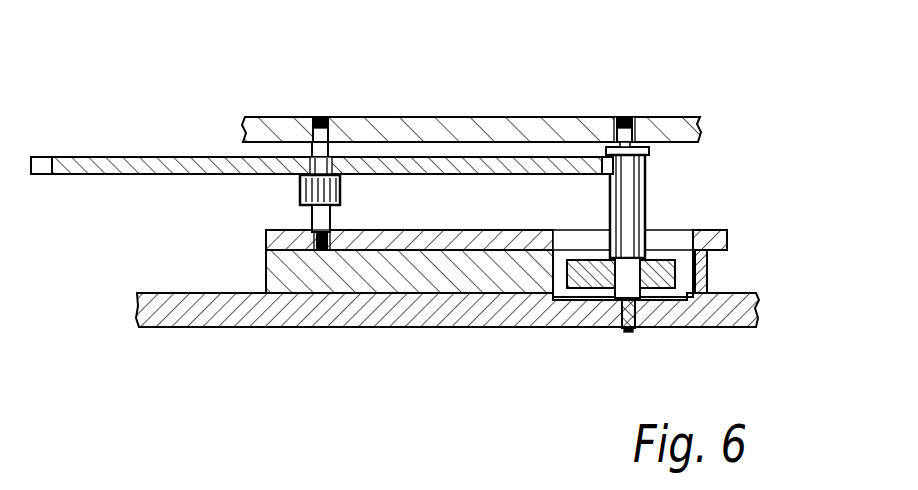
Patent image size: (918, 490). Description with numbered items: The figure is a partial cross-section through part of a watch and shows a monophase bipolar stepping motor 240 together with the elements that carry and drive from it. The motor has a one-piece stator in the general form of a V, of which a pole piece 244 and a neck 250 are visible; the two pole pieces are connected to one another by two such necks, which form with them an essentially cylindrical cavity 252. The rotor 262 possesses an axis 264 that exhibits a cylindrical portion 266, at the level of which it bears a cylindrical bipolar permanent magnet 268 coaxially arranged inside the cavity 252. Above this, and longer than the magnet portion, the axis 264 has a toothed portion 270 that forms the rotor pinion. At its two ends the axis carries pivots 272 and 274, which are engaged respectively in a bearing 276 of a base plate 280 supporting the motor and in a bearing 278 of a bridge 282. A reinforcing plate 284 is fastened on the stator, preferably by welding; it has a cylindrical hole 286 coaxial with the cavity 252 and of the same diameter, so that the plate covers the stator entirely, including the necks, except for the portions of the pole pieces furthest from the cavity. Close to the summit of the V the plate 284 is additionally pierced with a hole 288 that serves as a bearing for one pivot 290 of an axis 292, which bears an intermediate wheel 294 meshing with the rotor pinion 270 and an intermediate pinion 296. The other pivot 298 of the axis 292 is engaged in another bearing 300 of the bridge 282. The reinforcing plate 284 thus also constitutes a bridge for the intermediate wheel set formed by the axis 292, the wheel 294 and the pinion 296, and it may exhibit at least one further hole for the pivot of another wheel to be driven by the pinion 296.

The monophase bipolar stepping motor 240 is at (257, 272).
The pole piece 244 is at (405, 272).
The neck 250 is at (707, 285).
The cylindrical cavity 252 is at (708, 258).
The rotor 262 is at (648, 217).
The axis 264 is at (675, 305).
The cylindrical portion 266 is at (627, 278).
The cylindrical bipolar permanent magnet 268 is at (707, 278).
The toothed portion 270 is at (647, 175).
The pivot 272 is at (623, 330).
The pivot 274 is at (636, 118).
The bearing 276 is at (637, 329).
The bearing 278 is at (615, 137).
The base plate 280 is at (323, 317).
The bridge 282 is at (697, 117).
The reinforcing plate 284 is at (462, 247).
The cylindrical hole 286 is at (570, 219).
The hole 288 is at (318, 240).
The pivot 290 is at (323, 240).
The axis 292 is at (307, 216).
The intermediate wheel 294 is at (138, 157).
The intermediate pinion 296 is at (337, 190).
The pivot 298 is at (310, 152).
The bearing 300 is at (308, 133).